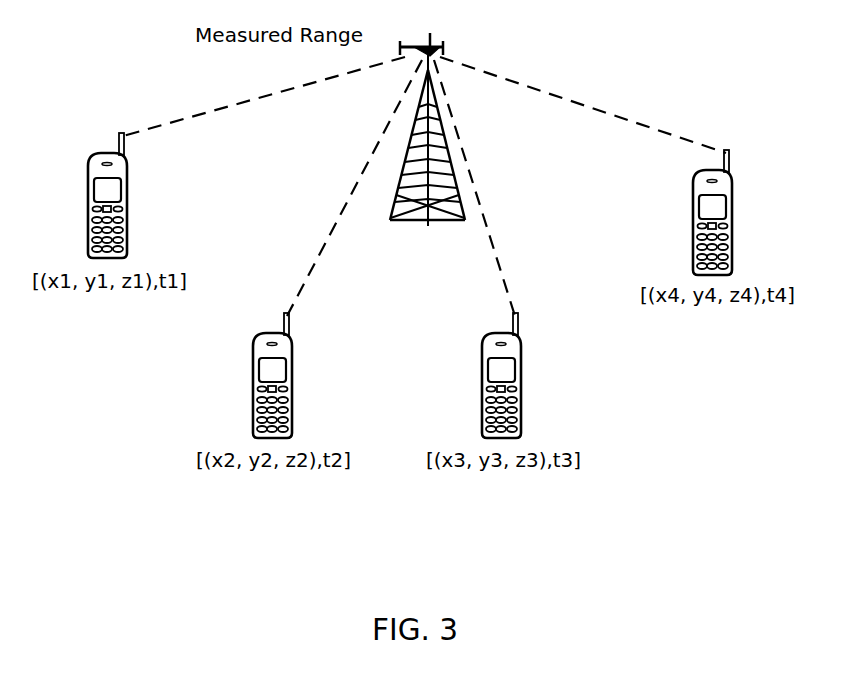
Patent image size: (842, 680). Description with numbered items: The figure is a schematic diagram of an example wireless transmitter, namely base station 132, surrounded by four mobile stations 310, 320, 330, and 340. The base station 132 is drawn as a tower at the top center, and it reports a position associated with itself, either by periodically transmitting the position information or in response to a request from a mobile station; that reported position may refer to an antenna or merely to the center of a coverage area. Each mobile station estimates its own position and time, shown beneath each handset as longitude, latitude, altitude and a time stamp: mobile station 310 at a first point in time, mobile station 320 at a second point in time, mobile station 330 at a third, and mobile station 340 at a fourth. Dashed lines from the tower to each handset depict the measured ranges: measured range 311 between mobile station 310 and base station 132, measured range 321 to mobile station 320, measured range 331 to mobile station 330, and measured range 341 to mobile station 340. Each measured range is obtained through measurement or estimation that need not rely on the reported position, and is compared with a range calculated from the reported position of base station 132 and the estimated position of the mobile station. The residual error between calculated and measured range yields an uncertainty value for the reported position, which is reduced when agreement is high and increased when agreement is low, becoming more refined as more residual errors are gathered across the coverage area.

The wireless transmitter (base station) 132 is at (427, 224).
The mobile station 310 is at (128, 191).
The mobile station 320 is at (292, 371).
The mobile station 330 is at (520, 371).
The mobile station 340 is at (732, 207).
The measured range 311 is at (322, 77).
The measured range 321 is at (330, 234).
The measured range 331 is at (494, 251).
The measured range 341 is at (557, 97).